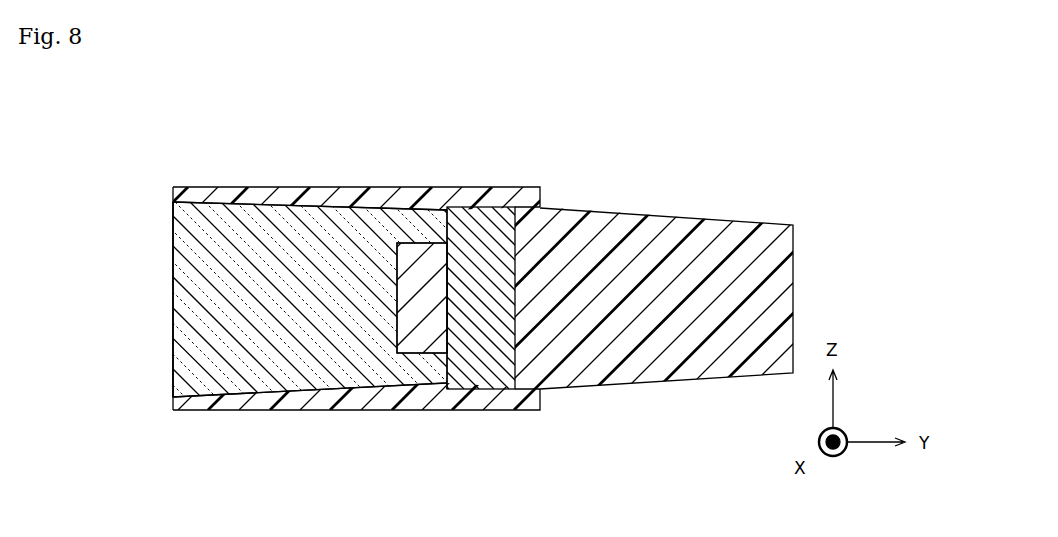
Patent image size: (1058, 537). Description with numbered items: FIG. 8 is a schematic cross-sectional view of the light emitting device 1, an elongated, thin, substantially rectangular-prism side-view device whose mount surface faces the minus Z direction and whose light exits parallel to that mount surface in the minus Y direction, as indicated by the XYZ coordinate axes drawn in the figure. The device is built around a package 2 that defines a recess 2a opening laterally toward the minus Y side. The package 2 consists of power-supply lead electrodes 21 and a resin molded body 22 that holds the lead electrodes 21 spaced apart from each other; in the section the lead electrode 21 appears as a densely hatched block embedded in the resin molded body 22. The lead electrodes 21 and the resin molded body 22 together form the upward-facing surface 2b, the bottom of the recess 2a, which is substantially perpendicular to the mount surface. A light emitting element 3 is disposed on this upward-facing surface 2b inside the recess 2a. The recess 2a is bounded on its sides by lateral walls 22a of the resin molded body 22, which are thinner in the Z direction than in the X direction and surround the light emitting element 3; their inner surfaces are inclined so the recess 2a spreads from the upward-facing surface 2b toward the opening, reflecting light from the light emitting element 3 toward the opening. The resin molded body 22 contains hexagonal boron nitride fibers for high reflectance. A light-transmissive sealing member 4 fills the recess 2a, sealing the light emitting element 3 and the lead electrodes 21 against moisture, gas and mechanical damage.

The light emitting device 1 is at (632, 173).
The package 2 is at (577, 100).
The recess 2a is at (160, 287).
The upward-facing surface 2b is at (443, 383).
The light emitting element 3 is at (423, 245).
The sealing member 4 is at (188, 263).
The power-supply lead electrodes 21 is at (482, 208).
The resin molded body 22 is at (517, 205).
The lateral walls 22a is at (267, 188).